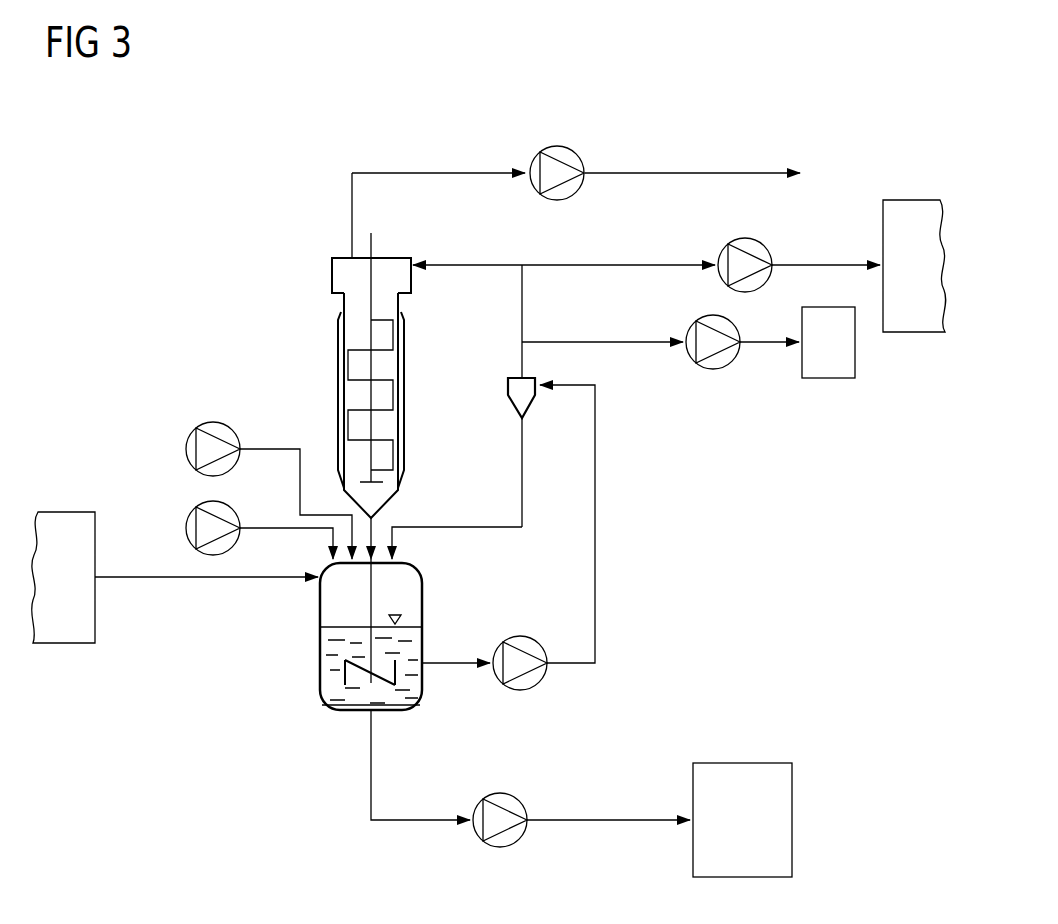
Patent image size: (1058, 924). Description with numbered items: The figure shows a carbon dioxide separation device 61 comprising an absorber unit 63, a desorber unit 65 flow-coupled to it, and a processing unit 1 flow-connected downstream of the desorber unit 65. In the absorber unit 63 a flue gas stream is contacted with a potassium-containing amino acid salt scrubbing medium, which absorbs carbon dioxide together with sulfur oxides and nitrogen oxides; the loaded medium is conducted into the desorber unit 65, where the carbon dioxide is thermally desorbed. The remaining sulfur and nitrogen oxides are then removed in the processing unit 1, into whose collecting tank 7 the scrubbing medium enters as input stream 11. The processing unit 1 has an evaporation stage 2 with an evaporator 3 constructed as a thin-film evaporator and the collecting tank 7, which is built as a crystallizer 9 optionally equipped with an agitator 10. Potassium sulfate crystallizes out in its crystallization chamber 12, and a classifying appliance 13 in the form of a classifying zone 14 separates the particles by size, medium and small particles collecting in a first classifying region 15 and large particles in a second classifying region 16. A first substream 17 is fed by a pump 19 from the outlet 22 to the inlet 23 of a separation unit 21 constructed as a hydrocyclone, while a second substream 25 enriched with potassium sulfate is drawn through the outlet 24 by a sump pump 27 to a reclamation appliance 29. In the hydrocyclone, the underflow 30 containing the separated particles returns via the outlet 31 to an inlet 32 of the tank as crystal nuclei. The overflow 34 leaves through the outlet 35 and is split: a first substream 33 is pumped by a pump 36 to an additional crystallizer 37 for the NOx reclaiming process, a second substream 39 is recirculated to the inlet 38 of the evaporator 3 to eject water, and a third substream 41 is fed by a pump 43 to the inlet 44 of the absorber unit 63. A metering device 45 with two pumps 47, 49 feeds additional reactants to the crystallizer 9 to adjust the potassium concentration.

The processing unit 1 is at (400, 125).
The evaporation stage 2 is at (175, 305).
The evaporator 3 is at (332, 270).
The collecting tank 7 is at (361, 642).
The crystallizer 9 is at (391, 642).
The agitator 10 is at (352, 670).
The input stream 11 is at (132, 577).
The crystallization chamber 12 is at (408, 598).
The classifying appliance 13 is at (426, 716).
The classifying zone 14 is at (407, 697).
The first classifying region 15 is at (412, 635).
The second classifying region 16 is at (358, 705).
The first substream 17 is at (595, 515).
The pump 19 is at (545, 685).
The separation unit 21 is at (512, 398).
The outlet 22 is at (422, 658).
The inlet 23 is at (542, 378).
The outlet 24 is at (378, 715).
The second substream 25 is at (372, 795).
The pump 27 is at (492, 847).
The reclamation appliance 29 is at (743, 763).
The underflow 30 is at (522, 480).
The outlet 31 is at (518, 420).
The inlet 32 is at (400, 560).
The first substream 33 is at (650, 345).
The overflow 34 is at (522, 348).
The outlet 35 is at (520, 376).
The pump 36 is at (705, 368).
The crystallizer 37 is at (830, 378).
The inlet 38 is at (412, 258).
The second substream 39 is at (482, 262).
The third substream 41 is at (600, 262).
The pump 43 is at (720, 250).
The inlet 44 is at (880, 260).
The metering device 45 is at (152, 471).
The pump 47 is at (212, 422).
The pump 49 is at (186, 528).
The carbon dioxide separation device 61 is at (702, 128).
The absorber unit 63 is at (906, 200).
The desorber unit 65 is at (60, 643).